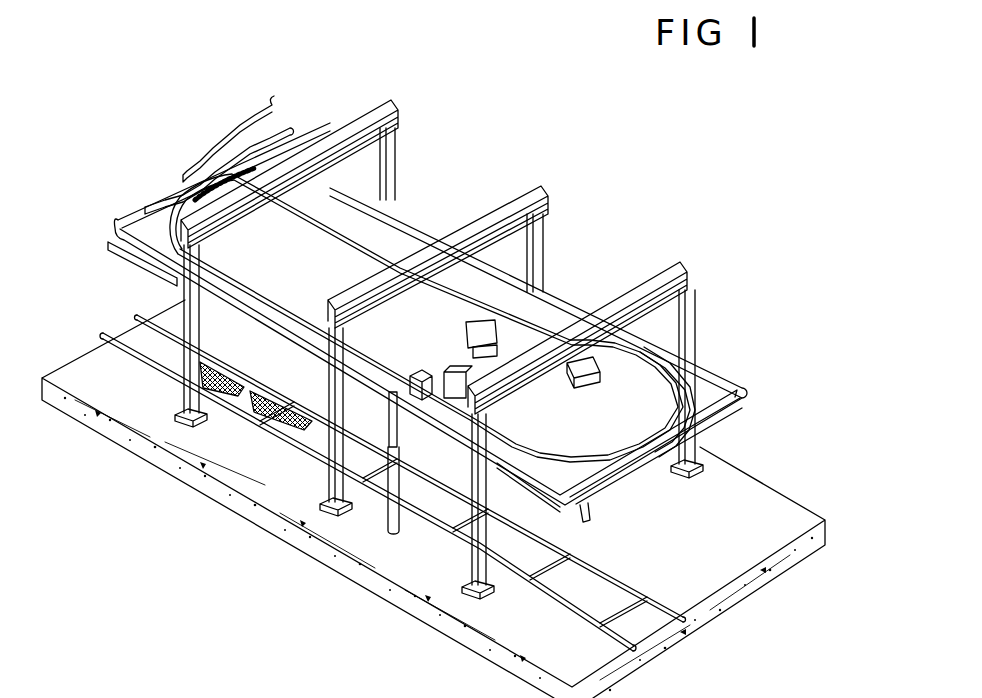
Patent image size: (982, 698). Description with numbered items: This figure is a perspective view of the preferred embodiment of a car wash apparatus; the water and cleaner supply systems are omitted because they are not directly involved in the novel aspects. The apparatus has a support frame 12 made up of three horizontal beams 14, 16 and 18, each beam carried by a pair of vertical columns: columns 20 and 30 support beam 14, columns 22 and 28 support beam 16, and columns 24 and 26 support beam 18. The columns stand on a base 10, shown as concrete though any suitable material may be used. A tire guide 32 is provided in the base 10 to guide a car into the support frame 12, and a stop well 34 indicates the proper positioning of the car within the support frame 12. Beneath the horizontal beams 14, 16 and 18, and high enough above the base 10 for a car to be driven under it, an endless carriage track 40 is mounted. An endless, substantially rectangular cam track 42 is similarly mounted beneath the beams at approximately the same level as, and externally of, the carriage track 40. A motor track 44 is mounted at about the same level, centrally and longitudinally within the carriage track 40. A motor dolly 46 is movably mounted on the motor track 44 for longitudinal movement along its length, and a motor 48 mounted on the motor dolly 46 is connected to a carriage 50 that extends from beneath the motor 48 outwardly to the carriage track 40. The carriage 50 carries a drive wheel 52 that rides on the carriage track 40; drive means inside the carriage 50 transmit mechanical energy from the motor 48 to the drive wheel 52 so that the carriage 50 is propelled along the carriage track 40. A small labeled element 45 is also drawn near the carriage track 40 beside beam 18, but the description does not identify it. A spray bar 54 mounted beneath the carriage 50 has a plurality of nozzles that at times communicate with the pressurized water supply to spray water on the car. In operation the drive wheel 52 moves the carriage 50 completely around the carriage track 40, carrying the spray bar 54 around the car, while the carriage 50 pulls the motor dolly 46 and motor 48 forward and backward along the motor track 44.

The base 10 is at (773, 528).
The support frame 12 is at (567, 188).
The horizontal beam 14 is at (372, 115).
The horizontal beam 16 is at (518, 198).
The horizontal beam 18 is at (658, 280).
The vertical column 20 is at (193, 395).
The vertical column 22 is at (335, 493).
The vertical column 24 is at (480, 565).
The vertical column 26 is at (687, 320).
The vertical column 28 is at (538, 237).
The vertical column 30 is at (385, 153).
The tire guide 32 is at (448, 523).
The stop well 34 is at (243, 397).
The carriage track 40 is at (675, 398).
The cam track 42 is at (715, 423).
The motor track 44 is at (347, 232).
The carrier pad 45 is at (596, 380).
The motor dolly 46 is at (467, 332).
The motor 48 is at (473, 351).
The carriage 50 is at (452, 372).
The drive wheel 52 is at (413, 388).
The spray bar 54 is at (393, 503).